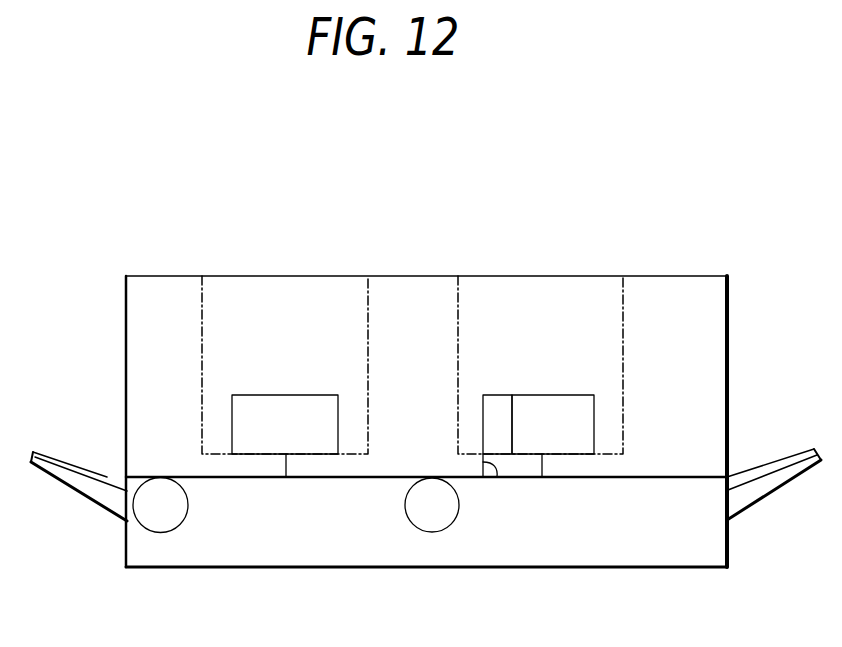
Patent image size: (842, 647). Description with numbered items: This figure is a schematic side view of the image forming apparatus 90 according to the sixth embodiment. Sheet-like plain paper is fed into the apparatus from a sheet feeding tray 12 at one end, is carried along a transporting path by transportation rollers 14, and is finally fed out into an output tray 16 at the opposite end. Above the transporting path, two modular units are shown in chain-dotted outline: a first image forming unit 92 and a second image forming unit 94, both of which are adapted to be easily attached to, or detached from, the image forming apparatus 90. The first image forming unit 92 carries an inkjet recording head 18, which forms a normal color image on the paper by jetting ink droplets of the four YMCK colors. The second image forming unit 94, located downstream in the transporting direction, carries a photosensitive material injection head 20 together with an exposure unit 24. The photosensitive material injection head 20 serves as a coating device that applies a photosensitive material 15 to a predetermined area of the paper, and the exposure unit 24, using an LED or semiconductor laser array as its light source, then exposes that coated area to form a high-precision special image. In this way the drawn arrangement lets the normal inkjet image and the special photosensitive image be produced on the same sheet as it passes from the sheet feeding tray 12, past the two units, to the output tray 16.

The image forming apparatus 90 is at (338, 224).
The first image forming unit 92 is at (200, 318).
The second image forming unit 94 is at (458, 318).
The inkjet recording head 18 is at (282, 403).
The photosensitive material injection head 20 is at (497, 403).
The exposure unit 24 is at (548, 403).
The photosensitive material 15 is at (497, 478).
The transportation roller 14 is at (160, 518).
The sheet feeding tray 12 is at (73, 485).
The output tray 16 is at (767, 490).